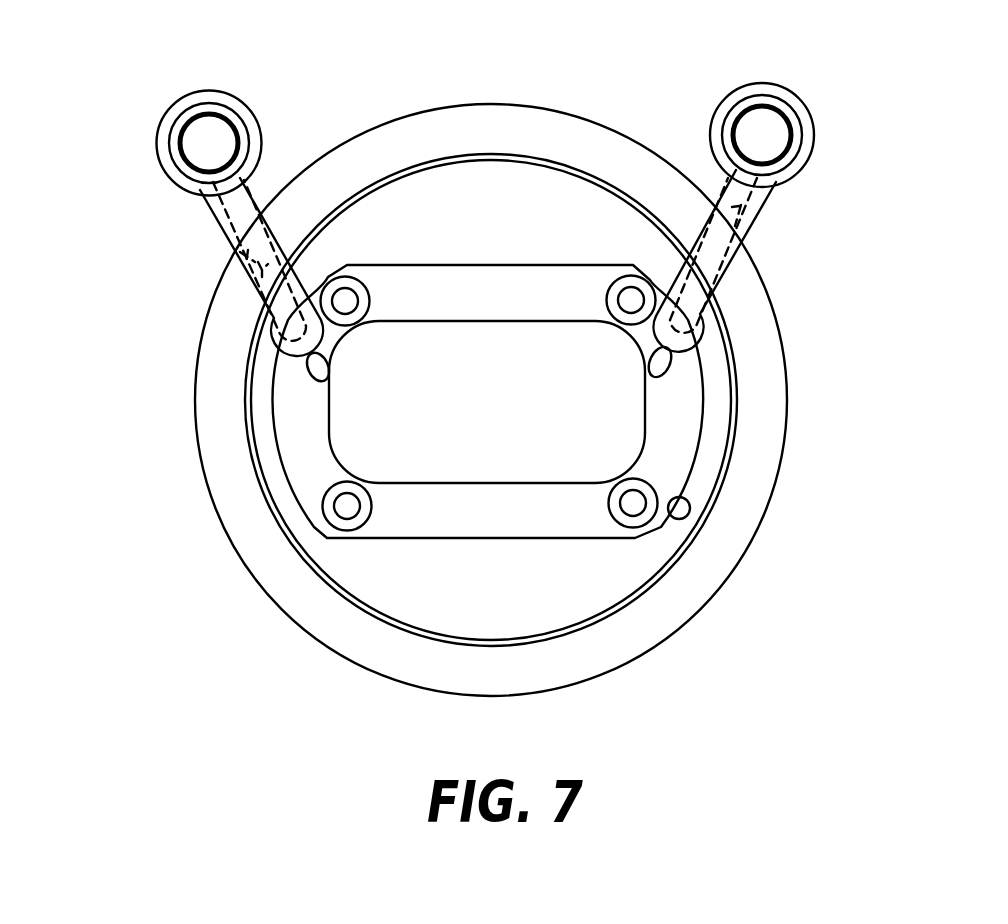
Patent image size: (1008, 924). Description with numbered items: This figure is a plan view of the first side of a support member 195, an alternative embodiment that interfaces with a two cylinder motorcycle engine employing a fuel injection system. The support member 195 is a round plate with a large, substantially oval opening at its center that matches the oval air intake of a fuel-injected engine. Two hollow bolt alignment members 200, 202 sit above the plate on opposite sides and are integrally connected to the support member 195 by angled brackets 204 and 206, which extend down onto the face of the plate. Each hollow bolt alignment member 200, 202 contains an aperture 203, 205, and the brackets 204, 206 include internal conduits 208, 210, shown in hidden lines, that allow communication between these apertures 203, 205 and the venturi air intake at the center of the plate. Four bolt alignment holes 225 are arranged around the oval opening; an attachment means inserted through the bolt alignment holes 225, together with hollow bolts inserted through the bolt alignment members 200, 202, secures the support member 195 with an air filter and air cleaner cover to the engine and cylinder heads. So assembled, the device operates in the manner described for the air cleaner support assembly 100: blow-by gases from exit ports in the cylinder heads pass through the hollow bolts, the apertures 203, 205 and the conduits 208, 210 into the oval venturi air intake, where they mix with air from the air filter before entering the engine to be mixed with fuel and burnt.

The air cleaner support assembly 100 is at (168, 618).
The support member 195 is at (782, 457).
The hollow bolt alignment member 200 is at (240, 105).
The hollow bolt alignment member 202 is at (738, 88).
The aperture 203 is at (770, 127).
The bracket 204 is at (265, 173).
The aperture 205 is at (197, 140).
The bracket 206 is at (712, 187).
The conduit 208 is at (238, 265).
The conduit 210 is at (742, 230).
The bolt alignment holes 225 is at (347, 506).